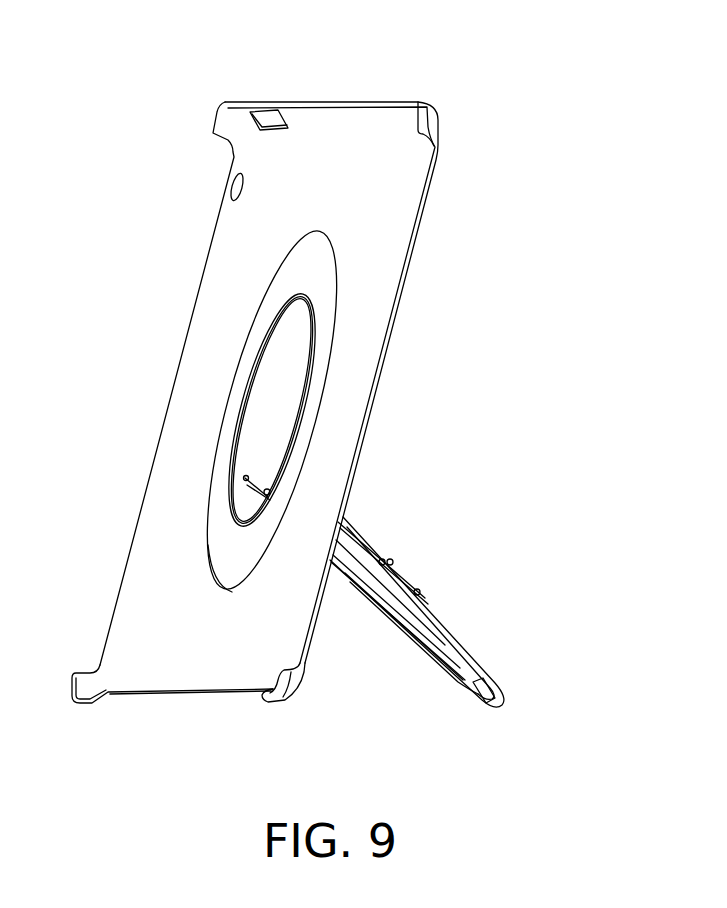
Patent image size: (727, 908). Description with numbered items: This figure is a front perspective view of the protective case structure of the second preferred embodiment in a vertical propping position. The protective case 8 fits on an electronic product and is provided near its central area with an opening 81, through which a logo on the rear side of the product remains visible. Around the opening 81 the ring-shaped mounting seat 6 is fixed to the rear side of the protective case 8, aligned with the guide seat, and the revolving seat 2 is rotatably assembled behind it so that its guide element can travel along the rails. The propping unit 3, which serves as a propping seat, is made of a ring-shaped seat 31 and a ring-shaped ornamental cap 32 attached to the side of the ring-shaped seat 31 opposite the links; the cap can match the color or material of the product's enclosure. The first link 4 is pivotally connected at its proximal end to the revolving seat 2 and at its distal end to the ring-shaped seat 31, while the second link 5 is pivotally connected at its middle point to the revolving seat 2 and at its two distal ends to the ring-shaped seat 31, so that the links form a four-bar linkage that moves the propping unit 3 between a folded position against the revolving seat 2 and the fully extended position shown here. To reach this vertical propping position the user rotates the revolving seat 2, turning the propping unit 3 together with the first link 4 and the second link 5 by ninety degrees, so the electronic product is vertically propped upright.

The protective case 8 is at (338, 103).
The mounting seat 6 is at (266, 327).
The opening 81 is at (270, 413).
The revolving seat 2 is at (272, 358).
The first link 4 is at (253, 483).
The propping unit 3 is at (467, 617).
The ring-shaped ornamental cap 32 is at (473, 650).
The ring-shaped seat 31 is at (460, 643).
The second link 5 is at (373, 583).